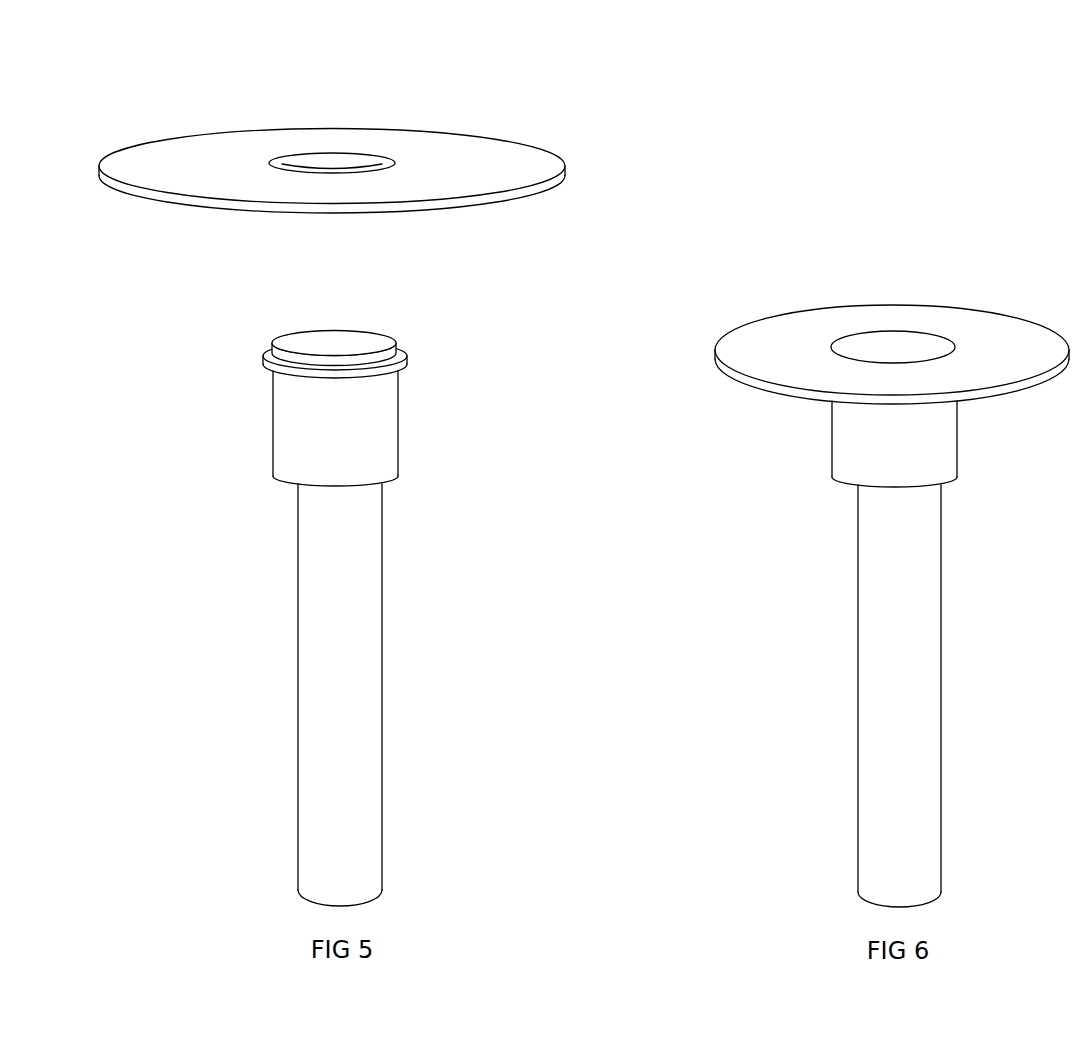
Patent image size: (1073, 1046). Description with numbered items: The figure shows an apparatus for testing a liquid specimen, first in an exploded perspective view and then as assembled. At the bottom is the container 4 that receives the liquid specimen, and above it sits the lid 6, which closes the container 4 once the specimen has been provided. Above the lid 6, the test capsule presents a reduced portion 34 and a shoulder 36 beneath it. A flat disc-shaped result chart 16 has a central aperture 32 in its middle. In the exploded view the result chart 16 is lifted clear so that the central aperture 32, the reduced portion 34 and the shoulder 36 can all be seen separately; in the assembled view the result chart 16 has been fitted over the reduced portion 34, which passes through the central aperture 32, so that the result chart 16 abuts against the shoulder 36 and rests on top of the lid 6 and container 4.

In FIG. 5, the container 4 is at (280, 678).
In FIG. 6, the container 4 is at (840, 693).
In FIG. 5, the lid 6 is at (255, 413).
In FIG. 6, the lid 6 is at (814, 433).
In FIG. 5, the result chart 16 is at (528, 140).
In FIG. 6, the result chart 16 is at (991, 298).
In FIG. 5, the central aperture 32 is at (328, 160).
In FIG. 5, the reduced portion 34 is at (294, 335).
In FIG. 6, the reduced portion 34 is at (889, 342).
In FIG. 5, the shoulder 36 is at (268, 352).